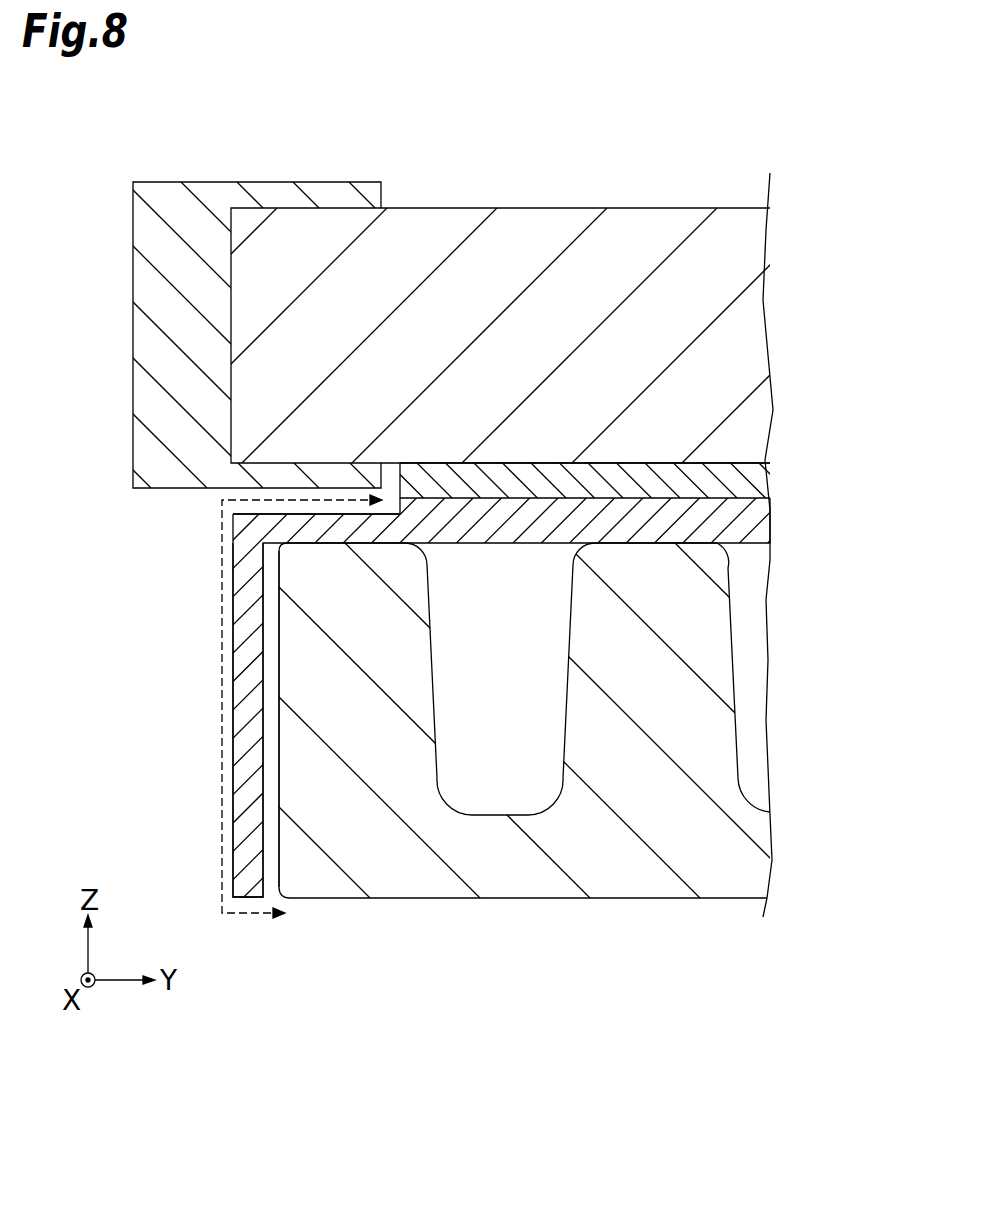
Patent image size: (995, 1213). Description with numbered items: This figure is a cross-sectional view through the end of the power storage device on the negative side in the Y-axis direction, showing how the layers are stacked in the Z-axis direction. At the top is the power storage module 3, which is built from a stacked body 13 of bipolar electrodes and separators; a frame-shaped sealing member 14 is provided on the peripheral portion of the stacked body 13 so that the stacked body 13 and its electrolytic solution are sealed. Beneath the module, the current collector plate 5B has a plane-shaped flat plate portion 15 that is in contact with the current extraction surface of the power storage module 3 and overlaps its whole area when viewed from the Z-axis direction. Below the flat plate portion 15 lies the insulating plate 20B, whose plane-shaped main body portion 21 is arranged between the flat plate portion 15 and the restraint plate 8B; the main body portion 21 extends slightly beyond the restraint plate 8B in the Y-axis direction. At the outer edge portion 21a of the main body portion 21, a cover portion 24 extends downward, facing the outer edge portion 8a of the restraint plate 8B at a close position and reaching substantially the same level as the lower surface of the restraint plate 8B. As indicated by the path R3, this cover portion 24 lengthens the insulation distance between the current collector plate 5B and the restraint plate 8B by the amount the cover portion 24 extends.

The stacked body 13 is at (508, 207).
The sealing member 14 is at (132, 272).
The power storage module 3 is at (780, 305).
The flat plate portion 15 is at (657, 463).
The current collector plate 5B is at (770, 480).
The main body portion 21 is at (770, 521).
The outer edge portion 21a is at (252, 530).
The cover portion 24 is at (243, 683).
The insulating plate 20B is at (745, 545).
The outer edge portion 8a is at (278, 752).
The restraint plate 8B is at (775, 870).
The path R3 is at (218, 572).